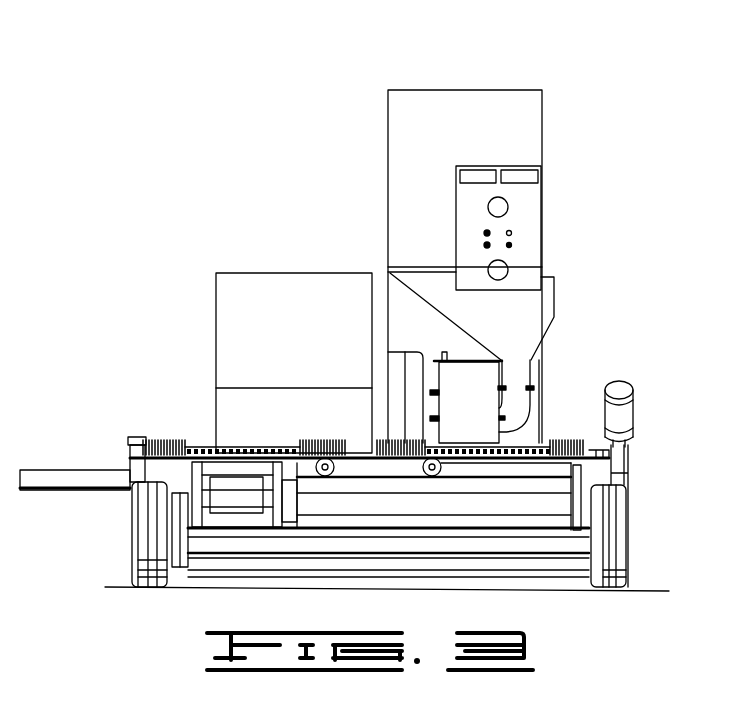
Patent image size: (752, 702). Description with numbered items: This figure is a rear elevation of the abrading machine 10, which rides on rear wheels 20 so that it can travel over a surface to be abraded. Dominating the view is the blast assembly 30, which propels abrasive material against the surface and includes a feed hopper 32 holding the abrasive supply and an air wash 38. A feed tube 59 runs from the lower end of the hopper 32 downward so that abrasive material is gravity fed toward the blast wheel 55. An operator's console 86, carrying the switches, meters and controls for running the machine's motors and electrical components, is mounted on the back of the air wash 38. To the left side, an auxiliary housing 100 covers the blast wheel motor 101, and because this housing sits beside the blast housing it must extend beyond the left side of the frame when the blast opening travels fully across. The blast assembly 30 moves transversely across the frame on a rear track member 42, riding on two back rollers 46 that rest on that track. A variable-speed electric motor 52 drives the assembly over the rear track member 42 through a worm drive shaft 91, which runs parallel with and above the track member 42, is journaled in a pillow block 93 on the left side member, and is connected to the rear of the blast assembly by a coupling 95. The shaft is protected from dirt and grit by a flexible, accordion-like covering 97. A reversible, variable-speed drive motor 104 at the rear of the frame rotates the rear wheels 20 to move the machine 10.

The abrading machine 10 is at (212, 207).
The rear wheels 20 is at (133, 547).
The blast assembly 30 is at (382, 235).
The feed hopper 32 is at (556, 296).
The air wash 38 is at (442, 90).
The rear track member 42 is at (90, 470).
The back rollers 46 is at (318, 477).
The variable-speed electric motor 52 is at (624, 388).
The blast wheel 55 is at (476, 420).
The feed tube 59 is at (528, 397).
The operator's console 86 is at (527, 215).
The worm drive shaft 91 is at (203, 442).
The pillow block 93 is at (127, 440).
The coupling 95 is at (357, 452).
The accordion-like covering 97 is at (173, 440).
The auxiliary housing 100 is at (250, 273).
The blast wheel motor 101 is at (380, 380).
The drive motor 104 is at (235, 500).